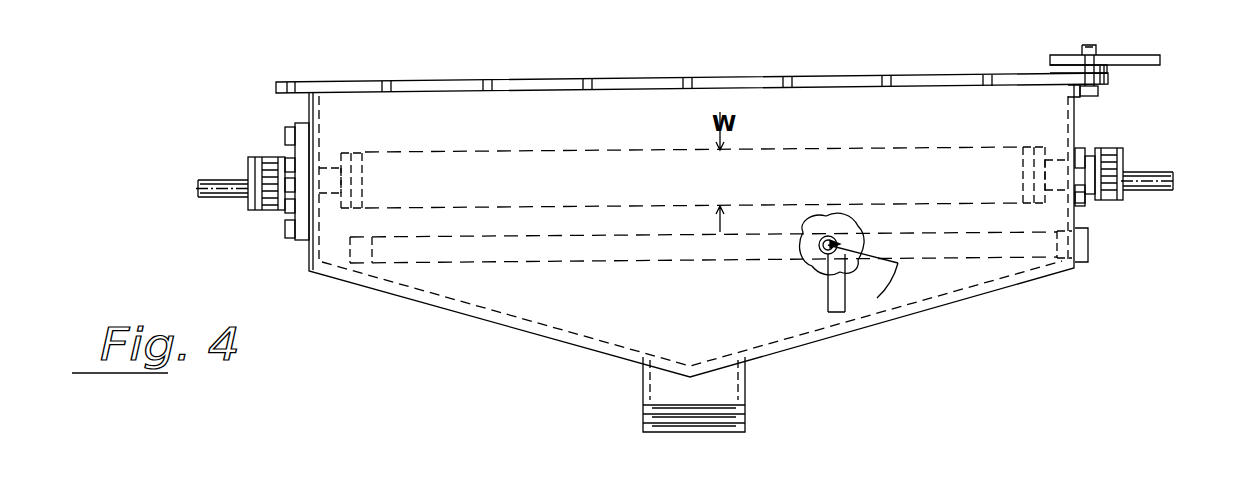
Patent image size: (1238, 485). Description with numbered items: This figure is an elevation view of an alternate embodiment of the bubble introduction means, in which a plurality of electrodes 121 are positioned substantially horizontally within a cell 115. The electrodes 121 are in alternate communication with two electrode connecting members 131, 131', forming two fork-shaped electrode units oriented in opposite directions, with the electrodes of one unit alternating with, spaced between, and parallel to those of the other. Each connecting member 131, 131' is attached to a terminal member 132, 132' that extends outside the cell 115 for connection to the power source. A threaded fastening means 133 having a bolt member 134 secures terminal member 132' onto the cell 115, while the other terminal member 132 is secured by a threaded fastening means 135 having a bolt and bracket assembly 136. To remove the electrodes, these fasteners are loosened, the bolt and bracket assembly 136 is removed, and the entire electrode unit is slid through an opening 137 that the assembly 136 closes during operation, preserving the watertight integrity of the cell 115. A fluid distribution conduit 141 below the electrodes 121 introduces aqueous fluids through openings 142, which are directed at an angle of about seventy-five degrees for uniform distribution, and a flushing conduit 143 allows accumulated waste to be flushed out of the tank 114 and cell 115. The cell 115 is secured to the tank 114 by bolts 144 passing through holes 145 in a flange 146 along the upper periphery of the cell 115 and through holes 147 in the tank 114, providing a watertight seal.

The tank 114 is at (1057, 55).
The cell 115 is at (307, 266).
The electrodes 121 is at (408, 152).
The electrode connecting member 131 is at (341, 124).
The electrode connecting member 131' is at (1011, 125).
The terminal member 132 is at (210, 221).
The terminal member 132' is at (1175, 163).
The threaded fastening means 133 is at (1122, 203).
The bolt member 134 is at (1090, 206).
The threaded fastening means 135 is at (268, 212).
The bolt and bracket assembly 136 is at (300, 126).
The opening 137 is at (296, 154).
The fluid distribution conduit 141 is at (1008, 258).
The openings 142 is at (840, 312).
The flushing conduit 143 is at (747, 378).
The bolts 144 is at (1100, 97).
The holes 145 is at (888, 73).
The flange 146 is at (1107, 80).
The holes 147 is at (1093, 61).